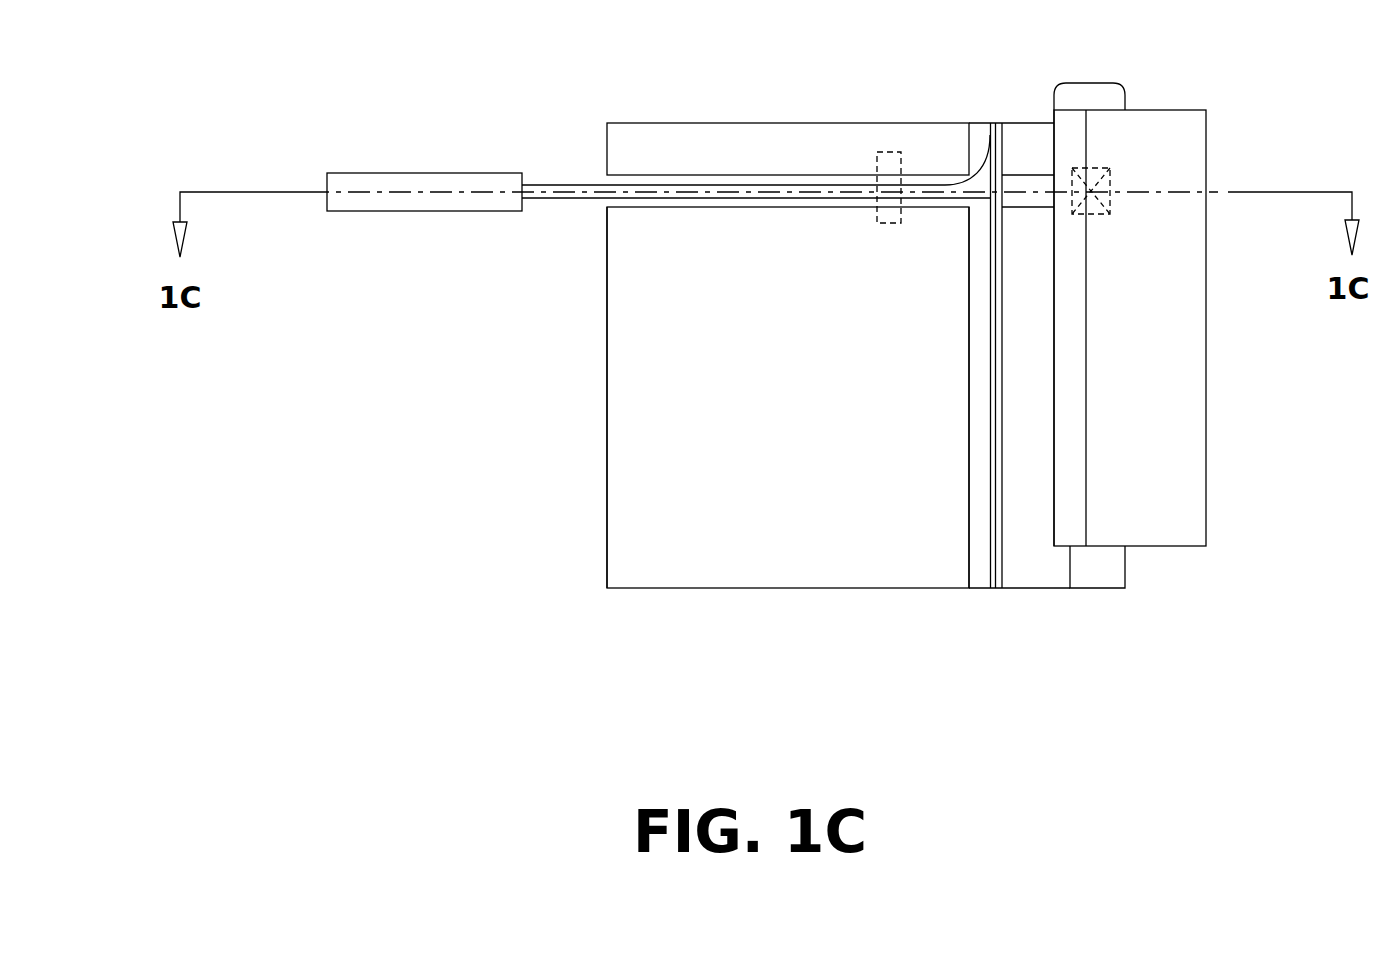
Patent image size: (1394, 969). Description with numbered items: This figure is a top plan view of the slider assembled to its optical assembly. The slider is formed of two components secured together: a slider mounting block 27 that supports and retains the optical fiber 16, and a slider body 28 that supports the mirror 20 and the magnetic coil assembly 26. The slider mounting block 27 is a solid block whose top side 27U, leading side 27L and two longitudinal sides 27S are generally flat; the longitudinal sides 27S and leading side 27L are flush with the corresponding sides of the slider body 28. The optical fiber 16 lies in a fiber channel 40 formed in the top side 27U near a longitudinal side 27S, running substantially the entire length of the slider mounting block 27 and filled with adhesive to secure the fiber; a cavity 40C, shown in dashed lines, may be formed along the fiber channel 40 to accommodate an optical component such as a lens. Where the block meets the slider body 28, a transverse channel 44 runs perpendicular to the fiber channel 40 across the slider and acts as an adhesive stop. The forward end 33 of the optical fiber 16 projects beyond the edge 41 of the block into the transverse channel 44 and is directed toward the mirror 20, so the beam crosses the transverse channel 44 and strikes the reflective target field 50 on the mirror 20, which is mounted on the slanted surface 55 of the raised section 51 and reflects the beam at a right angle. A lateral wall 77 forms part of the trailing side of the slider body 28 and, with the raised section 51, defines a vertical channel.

The optical fiber 16 is at (412, 177).
The fiber channel 40 is at (658, 173).
The cavity 40C is at (878, 152).
The slider mounting block 27 is at (588, 414).
The longitudinal side 27S is at (755, 122).
The top side 27U is at (823, 413).
The leading side 27L is at (607, 555).
The transverse channel 44 is at (970, 567).
The edge 41 is at (969, 153).
The forward end 33 is at (990, 123).
The lateral wall 77 is at (1031, 133).
The magnetic coil assembly 26 is at (1105, 93).
The mirror 20 is at (1182, 333).
The reflective target field 50 is at (1110, 186).
The slanted surface 55 is at (1110, 572).
The slider body 28 is at (1010, 600).
The raised section 51 is at (1028, 578).